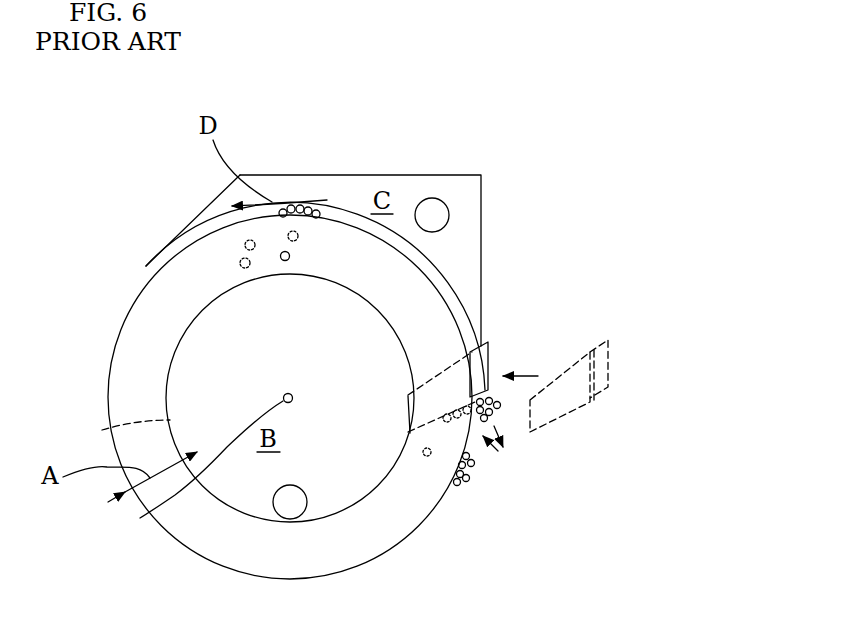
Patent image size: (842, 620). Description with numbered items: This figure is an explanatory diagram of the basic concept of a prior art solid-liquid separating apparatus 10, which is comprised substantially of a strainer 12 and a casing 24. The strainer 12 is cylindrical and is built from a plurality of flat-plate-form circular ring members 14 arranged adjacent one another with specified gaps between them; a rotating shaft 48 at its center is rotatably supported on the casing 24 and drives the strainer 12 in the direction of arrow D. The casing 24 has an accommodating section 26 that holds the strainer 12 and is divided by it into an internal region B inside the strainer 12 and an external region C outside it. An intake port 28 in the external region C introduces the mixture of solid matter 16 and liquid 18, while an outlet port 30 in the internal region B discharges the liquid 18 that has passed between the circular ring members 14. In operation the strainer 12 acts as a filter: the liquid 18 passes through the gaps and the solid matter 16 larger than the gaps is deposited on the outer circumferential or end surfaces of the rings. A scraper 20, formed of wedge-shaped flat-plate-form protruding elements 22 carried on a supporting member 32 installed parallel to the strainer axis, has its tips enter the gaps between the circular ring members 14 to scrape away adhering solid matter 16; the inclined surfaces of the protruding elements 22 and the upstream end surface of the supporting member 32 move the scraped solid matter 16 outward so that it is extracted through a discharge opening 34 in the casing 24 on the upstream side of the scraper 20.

The solid-liquid separating apparatus 10 is at (505, 110).
The strainer 12 is at (146, 264).
The circular ring members 14 is at (112, 334).
The solid matter 16 is at (246, 242).
The liquid 18 is at (357, 225).
The scraper 20 is at (493, 343).
The protruding elements 22 is at (443, 362).
The casing 24 is at (287, 170).
The accommodating section 26 is at (414, 197).
The intake port 28 is at (440, 215).
The outlet port 30 is at (298, 503).
The supporting member 32 is at (608, 387).
The discharge opening 34 is at (508, 452).
The rotating shaft 48 is at (135, 517).